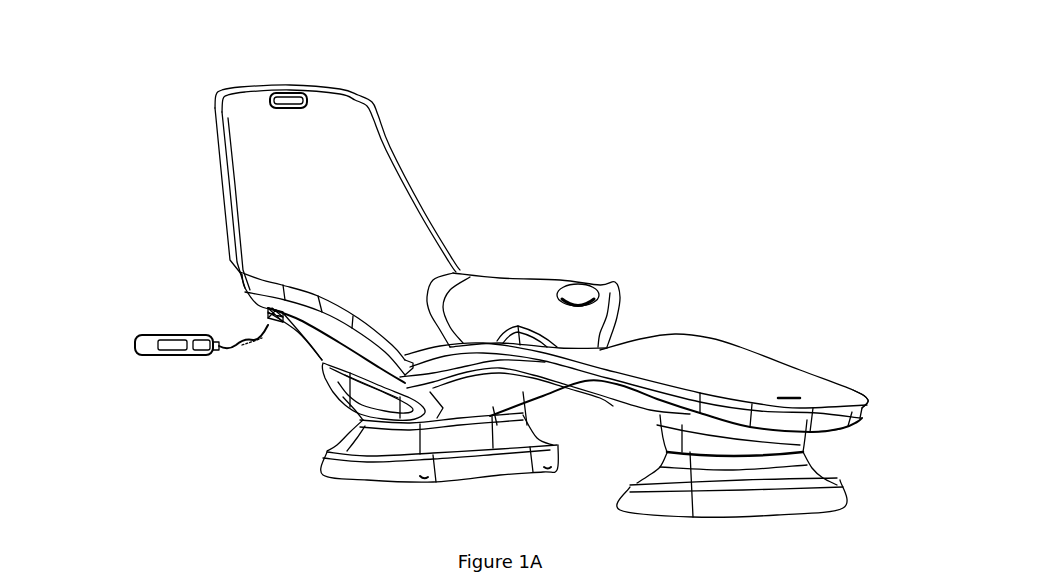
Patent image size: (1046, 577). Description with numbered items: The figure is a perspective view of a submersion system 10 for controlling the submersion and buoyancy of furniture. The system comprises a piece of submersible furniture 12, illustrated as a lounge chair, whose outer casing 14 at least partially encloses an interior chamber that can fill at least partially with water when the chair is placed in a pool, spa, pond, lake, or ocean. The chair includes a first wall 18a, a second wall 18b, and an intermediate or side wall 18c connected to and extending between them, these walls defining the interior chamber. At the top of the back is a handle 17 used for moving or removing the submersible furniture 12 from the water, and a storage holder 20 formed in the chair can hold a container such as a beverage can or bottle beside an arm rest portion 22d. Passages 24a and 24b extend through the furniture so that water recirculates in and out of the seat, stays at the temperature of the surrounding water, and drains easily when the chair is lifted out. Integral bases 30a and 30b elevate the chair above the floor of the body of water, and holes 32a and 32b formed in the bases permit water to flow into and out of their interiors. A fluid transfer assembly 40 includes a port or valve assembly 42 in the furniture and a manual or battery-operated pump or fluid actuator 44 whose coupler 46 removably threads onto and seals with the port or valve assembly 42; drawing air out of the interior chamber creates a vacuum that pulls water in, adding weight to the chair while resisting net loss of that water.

The submersion system 10 is at (657, 187).
The submersible furniture 12 is at (427, 220).
The outer casing 14 is at (372, 160).
The handle 17 is at (293, 88).
The first wall 18a is at (723, 357).
The second wall 18b is at (840, 433).
The intermediate or side wall 18c is at (863, 407).
The storage holder 20 is at (578, 293).
The arm rest portion 22d is at (615, 283).
The passage 24a is at (343, 427).
The passage 24b is at (540, 338).
The base 30a is at (343, 463).
The base 30b is at (823, 497).
The hole 32a is at (425, 478).
The hole 32b is at (548, 470).
The fluid transfer assembly 40 is at (163, 342).
The port or valve assembly 42 is at (282, 332).
The pump or fluid actuator 44 is at (167, 357).
The coupler 46 is at (265, 318).